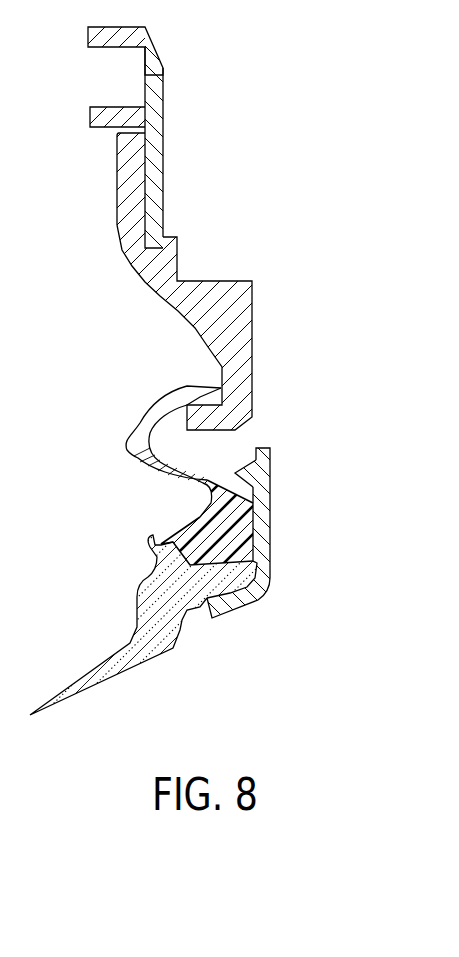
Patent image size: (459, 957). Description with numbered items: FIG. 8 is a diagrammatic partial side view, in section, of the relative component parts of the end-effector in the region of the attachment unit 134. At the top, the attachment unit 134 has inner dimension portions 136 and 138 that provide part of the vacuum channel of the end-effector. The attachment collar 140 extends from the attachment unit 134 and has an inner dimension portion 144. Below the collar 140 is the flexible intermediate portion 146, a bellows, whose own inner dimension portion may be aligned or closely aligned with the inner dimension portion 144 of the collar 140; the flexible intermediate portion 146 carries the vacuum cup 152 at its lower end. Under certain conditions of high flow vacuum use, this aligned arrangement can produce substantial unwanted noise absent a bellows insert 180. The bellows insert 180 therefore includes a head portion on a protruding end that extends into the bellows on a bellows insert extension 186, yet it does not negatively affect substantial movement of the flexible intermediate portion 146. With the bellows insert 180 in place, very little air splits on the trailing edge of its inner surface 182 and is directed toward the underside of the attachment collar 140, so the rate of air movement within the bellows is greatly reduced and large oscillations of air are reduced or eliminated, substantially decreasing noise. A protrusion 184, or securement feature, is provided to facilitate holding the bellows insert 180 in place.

The attachment unit 134 is at (153, 106).
The inner dimension portion 136 is at (160, 53).
The inner dimension portion 138 is at (163, 178).
The collar 140 is at (228, 292).
The inner dimension portion 144 is at (253, 345).
The flexible intermediate portion 146 is at (170, 402).
The vacuum cup 152 is at (147, 612).
The bellows insert 180 is at (240, 603).
The inner surface 182 is at (272, 534).
The protrusion 184 is at (254, 447).
The bellows insert extension 186 is at (270, 486).